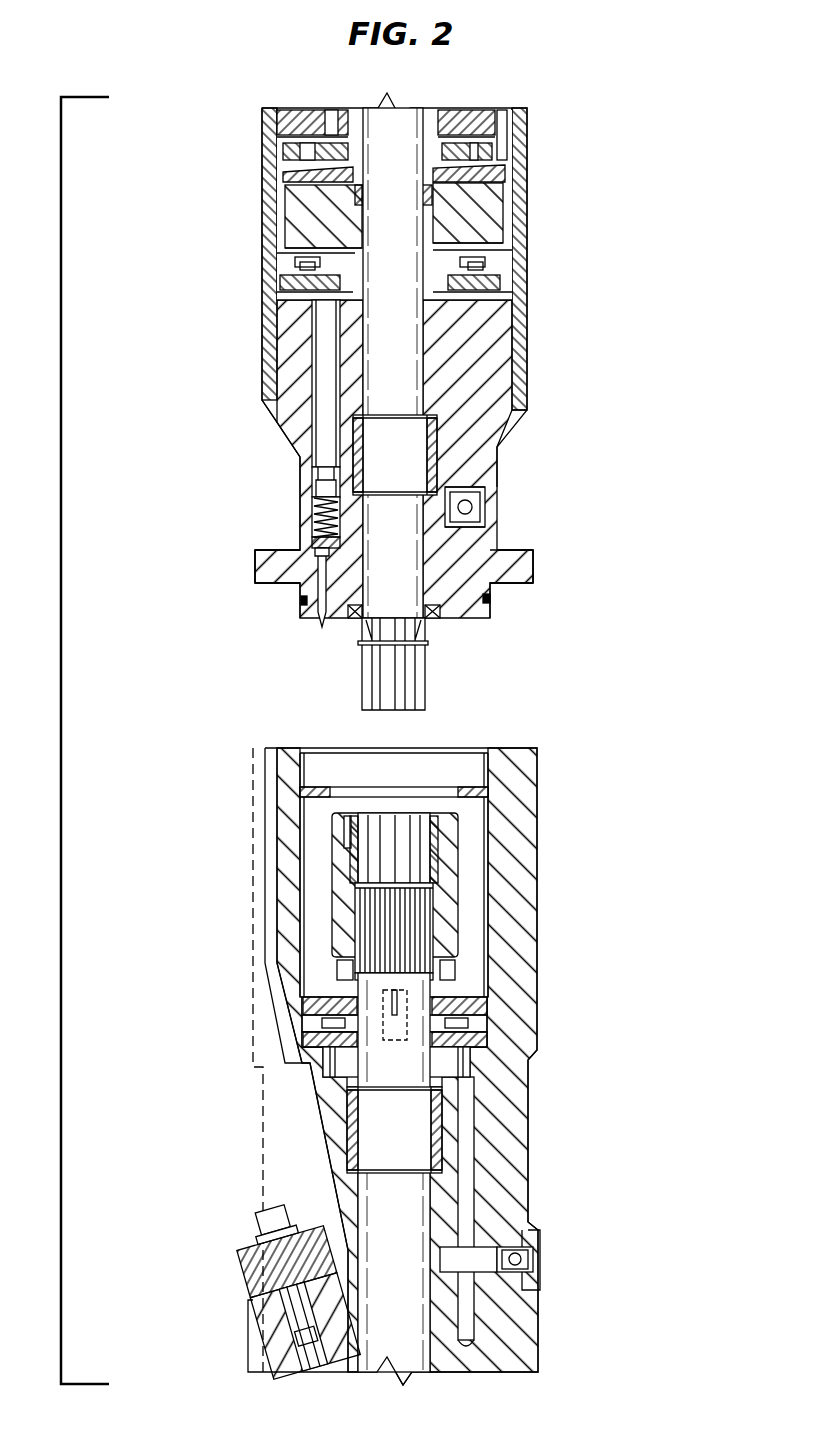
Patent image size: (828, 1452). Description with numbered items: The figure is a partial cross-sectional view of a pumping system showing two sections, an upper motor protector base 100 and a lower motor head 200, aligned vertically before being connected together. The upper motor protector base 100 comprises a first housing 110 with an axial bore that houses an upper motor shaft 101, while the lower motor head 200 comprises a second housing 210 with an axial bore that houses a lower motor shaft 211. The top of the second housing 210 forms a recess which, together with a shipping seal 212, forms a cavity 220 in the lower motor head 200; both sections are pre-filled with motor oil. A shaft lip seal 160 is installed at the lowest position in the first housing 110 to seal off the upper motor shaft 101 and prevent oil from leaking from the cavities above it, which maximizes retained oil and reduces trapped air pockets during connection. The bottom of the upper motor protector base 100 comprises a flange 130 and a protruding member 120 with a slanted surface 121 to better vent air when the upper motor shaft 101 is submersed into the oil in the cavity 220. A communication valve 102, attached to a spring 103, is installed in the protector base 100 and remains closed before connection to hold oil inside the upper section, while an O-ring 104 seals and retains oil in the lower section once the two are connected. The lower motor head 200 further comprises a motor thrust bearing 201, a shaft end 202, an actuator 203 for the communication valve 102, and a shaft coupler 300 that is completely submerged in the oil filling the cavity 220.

The upper motor protector base 100 is at (567, 233).
The first housing 110 is at (497, 347).
The upper motor shaft 101 is at (408, 551).
The communication valve 102 is at (303, 542).
The spring 103 is at (318, 513).
The O-ring 104 is at (302, 603).
The protruding member 120 is at (467, 603).
The slanted surface 121 is at (310, 612).
The flange 130 is at (488, 552).
The shaft lip seal 160 is at (437, 616).
The lower motor head 200 is at (567, 962).
The motor thrust bearing 201 is at (297, 1027).
The shaft end 202 is at (463, 1007).
The actuator 203 is at (490, 785).
The second housing 210 is at (522, 830).
The lower motor shaft 211 is at (413, 1208).
The shipping seal 212 is at (333, 752).
The cavity 220 is at (472, 890).
The shaft coupler 300 is at (343, 907).